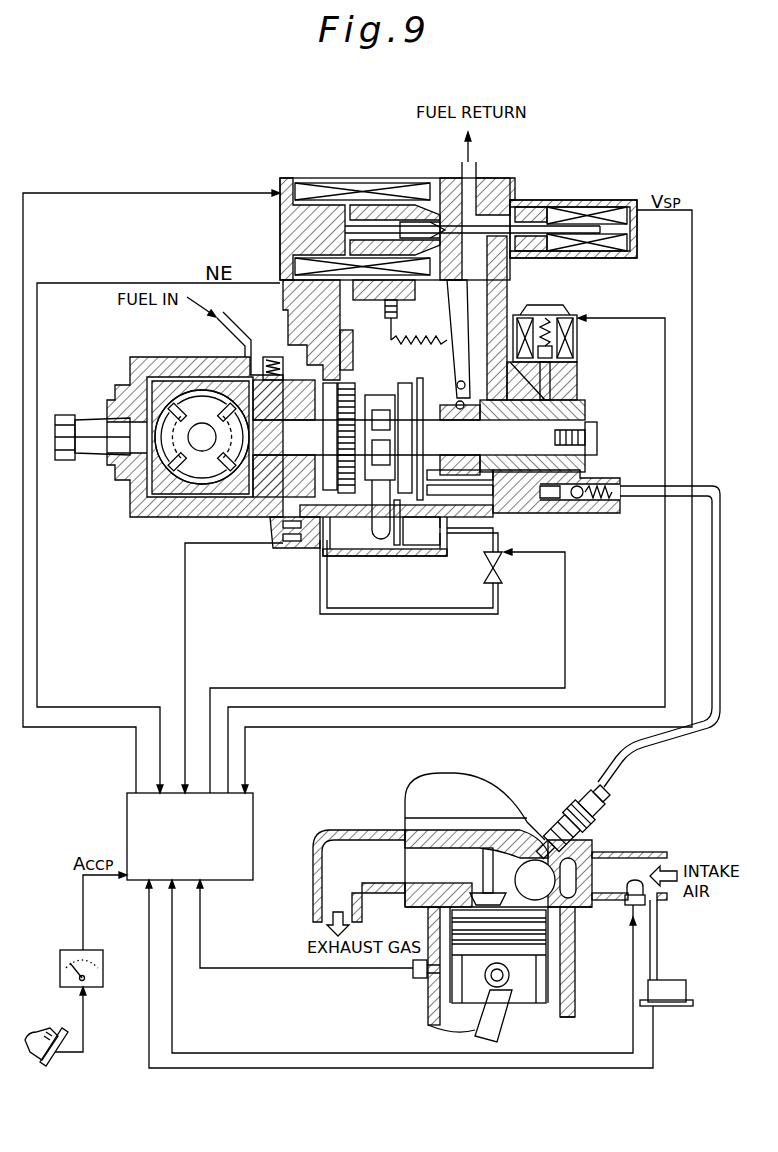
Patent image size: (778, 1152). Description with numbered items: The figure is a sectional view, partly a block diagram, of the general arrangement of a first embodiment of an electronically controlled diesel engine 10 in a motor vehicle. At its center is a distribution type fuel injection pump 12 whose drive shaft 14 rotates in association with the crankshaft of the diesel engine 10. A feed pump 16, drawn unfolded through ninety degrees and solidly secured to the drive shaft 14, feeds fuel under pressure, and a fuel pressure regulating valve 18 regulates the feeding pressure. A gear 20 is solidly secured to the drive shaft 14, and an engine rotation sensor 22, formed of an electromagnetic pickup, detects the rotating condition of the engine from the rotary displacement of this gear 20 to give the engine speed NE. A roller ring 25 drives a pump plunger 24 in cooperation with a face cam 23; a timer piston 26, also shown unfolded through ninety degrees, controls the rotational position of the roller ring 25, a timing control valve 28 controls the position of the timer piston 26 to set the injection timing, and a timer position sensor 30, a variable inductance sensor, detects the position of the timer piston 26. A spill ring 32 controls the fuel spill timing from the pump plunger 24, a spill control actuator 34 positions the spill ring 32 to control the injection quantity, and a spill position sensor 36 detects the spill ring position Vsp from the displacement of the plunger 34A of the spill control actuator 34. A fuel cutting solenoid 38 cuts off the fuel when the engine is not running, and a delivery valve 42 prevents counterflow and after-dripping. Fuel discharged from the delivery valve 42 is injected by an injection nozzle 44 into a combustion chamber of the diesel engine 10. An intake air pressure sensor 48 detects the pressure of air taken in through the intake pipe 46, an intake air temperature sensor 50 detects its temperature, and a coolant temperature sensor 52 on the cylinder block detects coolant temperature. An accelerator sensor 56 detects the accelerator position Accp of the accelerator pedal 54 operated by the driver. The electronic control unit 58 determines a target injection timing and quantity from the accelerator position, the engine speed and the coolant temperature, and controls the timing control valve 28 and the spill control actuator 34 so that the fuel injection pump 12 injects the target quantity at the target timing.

The diesel engine 10 is at (504, 784).
The distribution type fuel injection pump 12 is at (569, 188).
The drive shaft 14 is at (92, 428).
The feed pump 16 is at (178, 478).
The fuel pressure regulating valve 18 is at (271, 357).
The gear 20 is at (356, 395).
The engine rotation sensor 22 is at (354, 356).
The face cam 23 is at (400, 540).
The pump plunger 24 is at (565, 428).
The roller ring 25 is at (367, 542).
The timer piston 26 is at (421, 545).
The timing control valve 28 is at (504, 578).
The timer position sensor 30 is at (290, 548).
The spill ring 32 is at (445, 405).
The spill control actuator 34 is at (396, 172).
The plunger 34A is at (440, 210).
The spill position sensor 36 is at (601, 202).
The fuel cutting solenoid 38 is at (578, 342).
The delivery valve 42 is at (592, 507).
The injection nozzle 44 is at (604, 808).
The intake pipe 46 is at (635, 852).
The intake air pressure sensor 48 is at (676, 985).
The intake air temperature sensor 50 is at (627, 905).
The coolant temperature sensor 52 is at (417, 960).
The accelerator pedal 54 is at (52, 1058).
The accelerator sensor 56 is at (97, 982).
The electronic control unit 58 is at (253, 822).